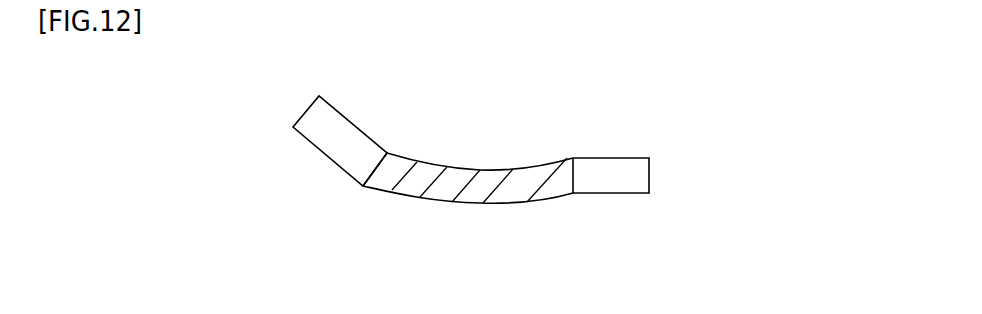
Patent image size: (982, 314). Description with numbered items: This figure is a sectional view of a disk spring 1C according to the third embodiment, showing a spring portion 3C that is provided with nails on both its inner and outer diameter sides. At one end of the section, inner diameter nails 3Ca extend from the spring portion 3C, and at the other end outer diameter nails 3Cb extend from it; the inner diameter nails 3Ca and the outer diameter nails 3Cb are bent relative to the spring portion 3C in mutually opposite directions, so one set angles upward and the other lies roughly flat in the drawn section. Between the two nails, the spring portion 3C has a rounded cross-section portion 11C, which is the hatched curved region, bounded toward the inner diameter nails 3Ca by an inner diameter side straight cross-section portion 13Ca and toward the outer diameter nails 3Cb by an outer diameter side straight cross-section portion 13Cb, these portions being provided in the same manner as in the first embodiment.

The disk spring 1C is at (483, 152).
The spring portion 3C is at (530, 167).
The inner diameter nails 3Ca is at (320, 129).
The outer diameter nails 3Cb is at (628, 183).
The rounded cross-section portion 11C is at (483, 205).
The inner diameter side straight cross-section portion 13Ca is at (380, 197).
The outer diameter side straight cross-section portion 13Cb is at (547, 205).